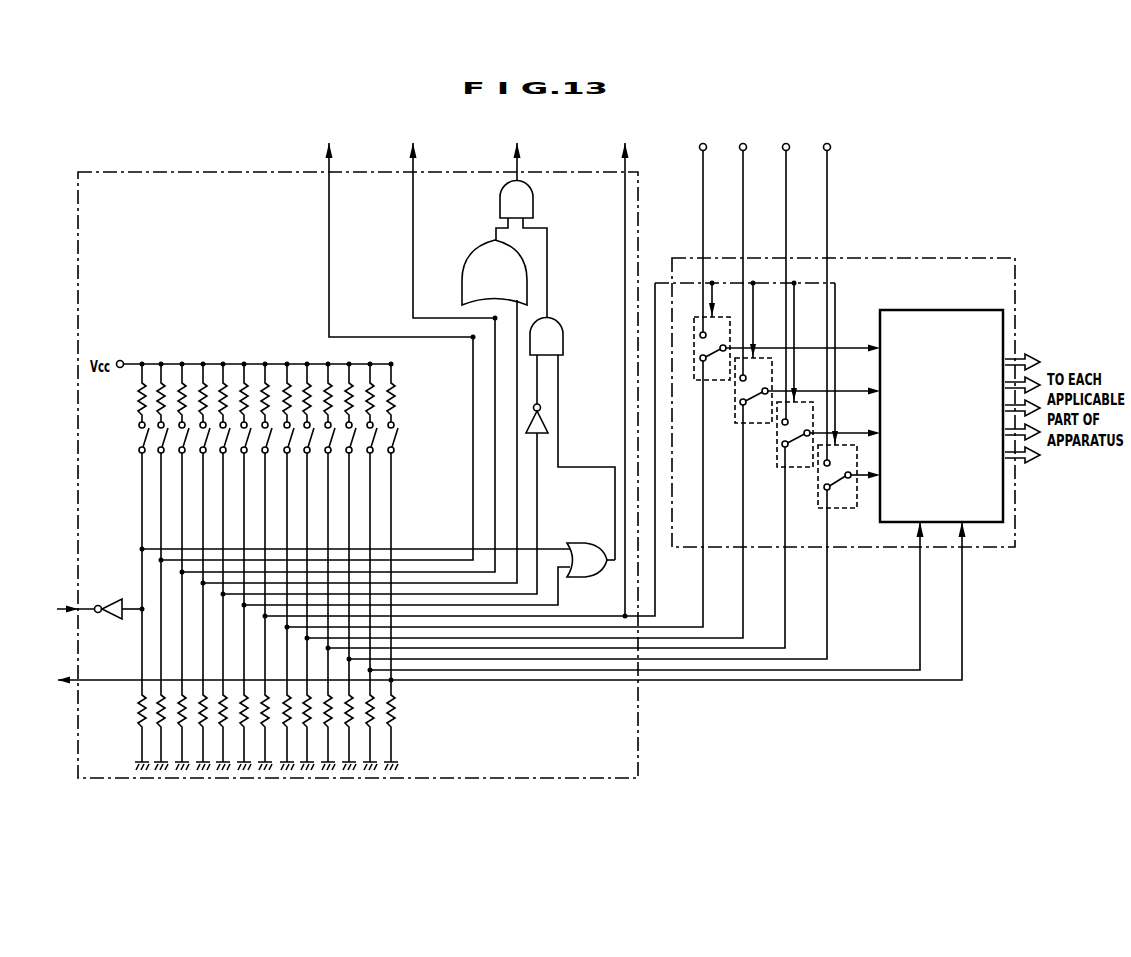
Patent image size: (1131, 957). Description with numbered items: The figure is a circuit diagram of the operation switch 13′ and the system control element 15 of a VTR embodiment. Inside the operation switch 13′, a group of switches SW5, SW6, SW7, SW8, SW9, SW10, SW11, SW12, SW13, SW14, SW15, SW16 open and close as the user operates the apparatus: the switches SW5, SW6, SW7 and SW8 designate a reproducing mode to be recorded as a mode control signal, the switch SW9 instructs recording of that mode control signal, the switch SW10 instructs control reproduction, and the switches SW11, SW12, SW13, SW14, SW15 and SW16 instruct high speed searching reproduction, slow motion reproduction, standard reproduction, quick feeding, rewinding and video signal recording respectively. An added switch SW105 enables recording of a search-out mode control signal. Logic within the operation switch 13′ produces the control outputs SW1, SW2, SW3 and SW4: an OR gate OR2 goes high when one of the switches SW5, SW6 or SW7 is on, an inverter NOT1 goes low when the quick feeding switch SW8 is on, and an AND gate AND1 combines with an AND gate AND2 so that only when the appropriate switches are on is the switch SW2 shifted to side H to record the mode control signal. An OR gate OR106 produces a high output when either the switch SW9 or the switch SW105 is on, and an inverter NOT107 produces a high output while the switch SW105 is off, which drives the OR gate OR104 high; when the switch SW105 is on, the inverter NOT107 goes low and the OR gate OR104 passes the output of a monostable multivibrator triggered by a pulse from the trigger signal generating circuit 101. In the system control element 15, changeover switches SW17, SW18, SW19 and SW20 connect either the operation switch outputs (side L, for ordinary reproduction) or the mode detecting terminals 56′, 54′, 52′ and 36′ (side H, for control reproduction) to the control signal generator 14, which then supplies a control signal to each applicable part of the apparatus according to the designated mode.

The operation switch 13′ is at (175, 170).
The system control element 15 is at (933, 257).
The control signal generator 14 is at (967, 310).
The trigger signal generating circuit 101 is at (498, 604).
The terminal 56′ is at (703, 143).
The terminal 54′ is at (743, 143).
The terminal 52′ is at (786, 143).
The terminal 36′ is at (827, 143).
The switch SW1 is at (625, 367).
The switch SW2 is at (517, 149).
The switch SW3 is at (446, 218).
The switch SW4 is at (393, 227).
The switch SW5 is at (142, 452).
The switch SW6 is at (161, 452).
The switch SW7 is at (182, 452).
The switch SW8 is at (203, 452).
The switch SW9 is at (223, 452).
The switch SW10 is at (244, 452).
The switch SW11 is at (307, 453).
The switch SW12 is at (328, 453).
The switch SW13 is at (349, 453).
The switch SW14 is at (370, 453).
The switch SW15 is at (394, 452).
The switch SW16 is at (398, 435).
The switch SW17 is at (839, 481).
The switch SW18 is at (797, 438).
The switch SW19 is at (755, 396).
The switch SW20 is at (714, 353).
The switch SW105 is at (148, 436).
The OR gate OR2 is at (468, 265).
The OR gate OR106 is at (583, 541).
The OR gate OR104 is at (53, 613).
The AND gate AND1 is at (563, 332).
The AND gate AND2 is at (533, 198).
The inverter NOT1 is at (544, 418).
The inverter NOT107 is at (107, 621).